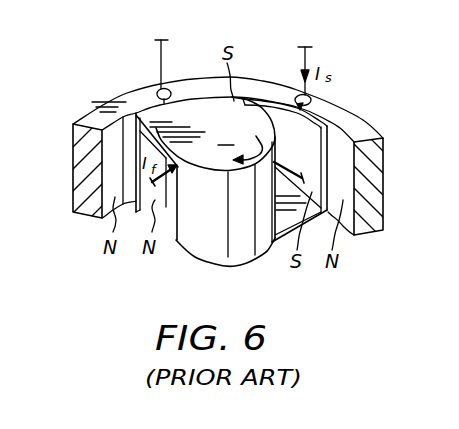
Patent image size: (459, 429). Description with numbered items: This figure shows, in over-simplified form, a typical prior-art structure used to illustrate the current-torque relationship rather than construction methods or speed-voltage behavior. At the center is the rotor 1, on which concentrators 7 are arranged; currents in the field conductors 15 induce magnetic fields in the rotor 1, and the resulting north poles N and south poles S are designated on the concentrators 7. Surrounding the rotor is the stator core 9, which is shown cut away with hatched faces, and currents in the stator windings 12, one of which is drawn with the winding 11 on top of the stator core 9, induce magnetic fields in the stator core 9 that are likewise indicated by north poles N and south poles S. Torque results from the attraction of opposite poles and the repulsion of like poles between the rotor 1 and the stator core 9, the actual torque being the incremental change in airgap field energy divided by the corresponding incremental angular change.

The rotor 1 is at (207, 247).
The concentrator 7 is at (170, 185).
The stator core 9 is at (386, 171).
The field coil 11 is at (157, 88).
The stator winding 12 is at (302, 64).
The field conductor 15 is at (287, 167).